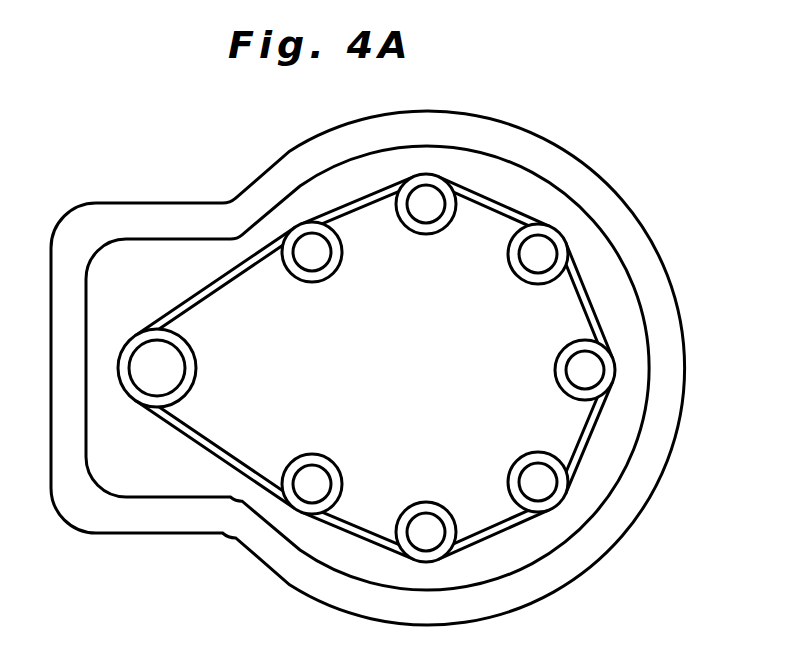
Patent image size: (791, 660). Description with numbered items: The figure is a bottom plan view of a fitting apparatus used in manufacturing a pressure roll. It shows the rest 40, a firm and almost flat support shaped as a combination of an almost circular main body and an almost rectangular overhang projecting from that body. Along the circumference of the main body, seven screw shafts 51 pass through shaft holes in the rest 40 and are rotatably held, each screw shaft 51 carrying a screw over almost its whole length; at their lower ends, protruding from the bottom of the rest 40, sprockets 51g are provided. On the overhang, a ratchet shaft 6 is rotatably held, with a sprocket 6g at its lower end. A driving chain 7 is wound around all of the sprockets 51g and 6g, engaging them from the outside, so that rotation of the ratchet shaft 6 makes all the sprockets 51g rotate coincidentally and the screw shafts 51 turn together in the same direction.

The rest 40 is at (640, 228).
The driving chain 7 is at (492, 213).
The screw shaft 51 is at (313, 253).
The sprocket 51g is at (340, 268).
The ratchet shaft 6 is at (158, 368).
The sprocket 6g is at (192, 350).